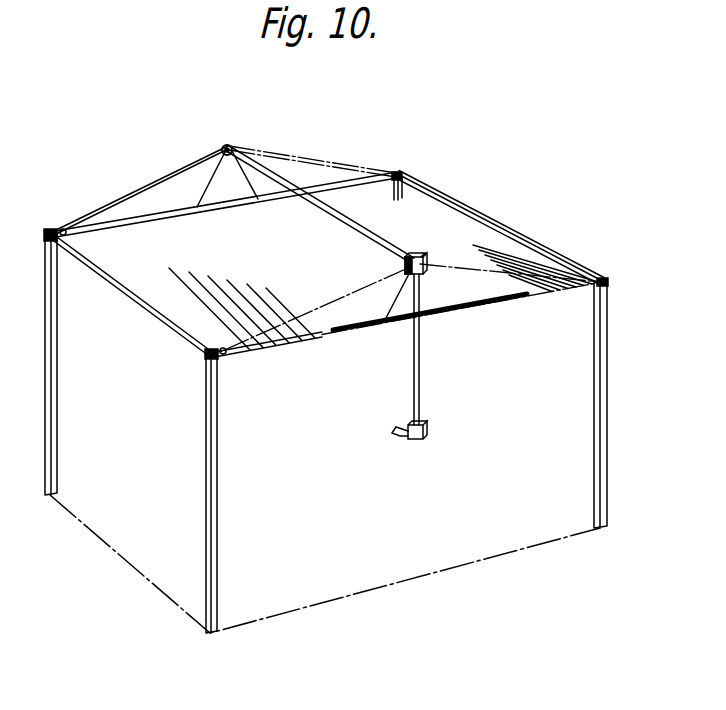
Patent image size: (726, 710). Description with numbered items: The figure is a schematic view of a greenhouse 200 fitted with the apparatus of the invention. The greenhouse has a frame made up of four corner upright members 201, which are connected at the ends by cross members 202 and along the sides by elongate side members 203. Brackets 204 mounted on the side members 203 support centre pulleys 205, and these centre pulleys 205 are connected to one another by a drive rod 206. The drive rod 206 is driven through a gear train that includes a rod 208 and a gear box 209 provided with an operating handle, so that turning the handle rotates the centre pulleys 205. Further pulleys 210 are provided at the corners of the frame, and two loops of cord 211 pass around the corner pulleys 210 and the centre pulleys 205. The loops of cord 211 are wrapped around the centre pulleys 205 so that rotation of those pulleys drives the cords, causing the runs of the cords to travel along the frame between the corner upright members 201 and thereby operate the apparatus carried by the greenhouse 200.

The greenhouse 200 is at (147, 540).
The corner upright members 201 is at (58, 408).
The cross members 202 is at (142, 307).
The elongate side members 203 is at (230, 206).
The brackets 204 is at (212, 177).
The centre pulleys 205 is at (230, 145).
The drive rod 206 is at (352, 226).
The rod 208 is at (421, 394).
The gear box 209 is at (427, 433).
The pulleys 210 is at (62, 231).
The loops of cord 211 is at (133, 191).